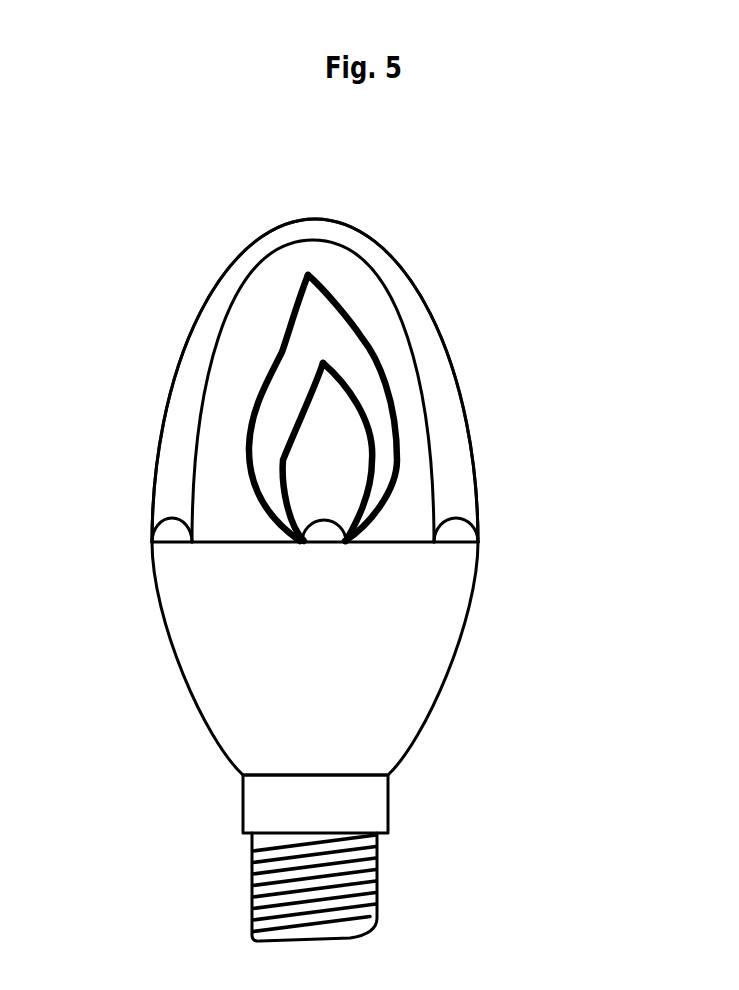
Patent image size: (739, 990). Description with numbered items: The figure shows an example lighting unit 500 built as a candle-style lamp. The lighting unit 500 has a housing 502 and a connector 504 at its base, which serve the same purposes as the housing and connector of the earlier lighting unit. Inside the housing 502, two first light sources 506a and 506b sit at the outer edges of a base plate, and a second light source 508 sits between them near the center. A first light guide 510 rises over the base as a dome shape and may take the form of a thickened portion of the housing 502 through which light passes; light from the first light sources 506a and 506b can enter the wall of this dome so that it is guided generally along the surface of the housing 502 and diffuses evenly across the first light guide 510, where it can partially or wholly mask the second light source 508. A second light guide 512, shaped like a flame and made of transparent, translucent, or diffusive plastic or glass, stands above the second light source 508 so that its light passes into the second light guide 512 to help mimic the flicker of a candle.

The lighting unit 500 is at (393, 200).
The housing 502 is at (443, 332).
The connector 504 is at (377, 897).
The first light source 506a is at (158, 520).
The first light source 506b is at (458, 518).
The second light source 508 is at (318, 535).
The first light guide 510 is at (445, 422).
The second light guide 512 is at (282, 350).